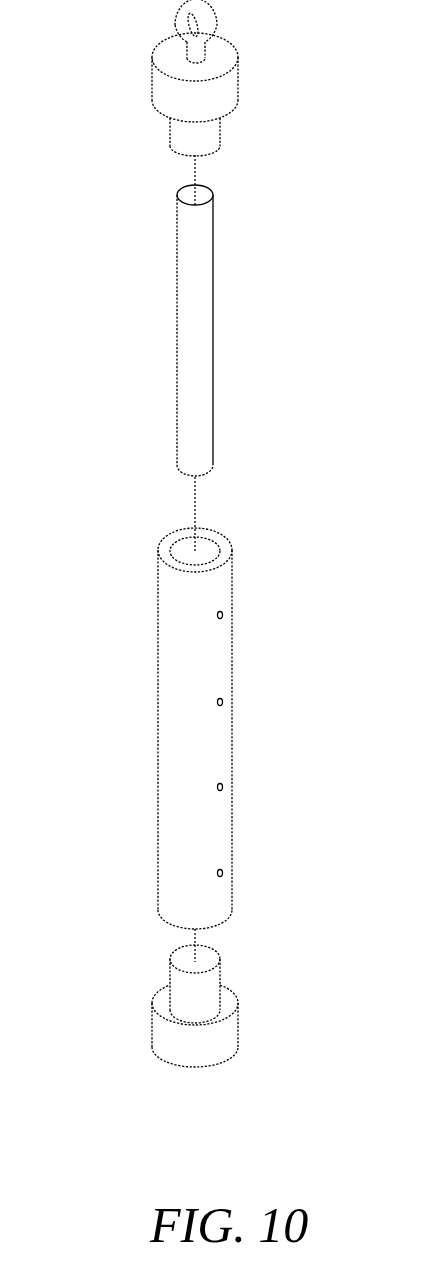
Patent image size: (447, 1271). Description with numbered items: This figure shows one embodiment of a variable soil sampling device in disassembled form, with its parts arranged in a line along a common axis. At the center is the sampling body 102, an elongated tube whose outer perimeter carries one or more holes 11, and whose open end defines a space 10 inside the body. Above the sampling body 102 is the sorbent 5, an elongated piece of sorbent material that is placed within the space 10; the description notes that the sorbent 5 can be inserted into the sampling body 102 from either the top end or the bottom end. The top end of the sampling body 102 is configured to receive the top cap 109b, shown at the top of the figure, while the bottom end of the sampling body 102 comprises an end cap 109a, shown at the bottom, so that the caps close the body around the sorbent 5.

The sorbent 5 is at (213, 317).
The space 10 is at (207, 550).
The holes 11 is at (220, 700).
The sampling body 102 is at (158, 758).
The end cap 109a is at (233, 1035).
The top cap 109b is at (233, 90).